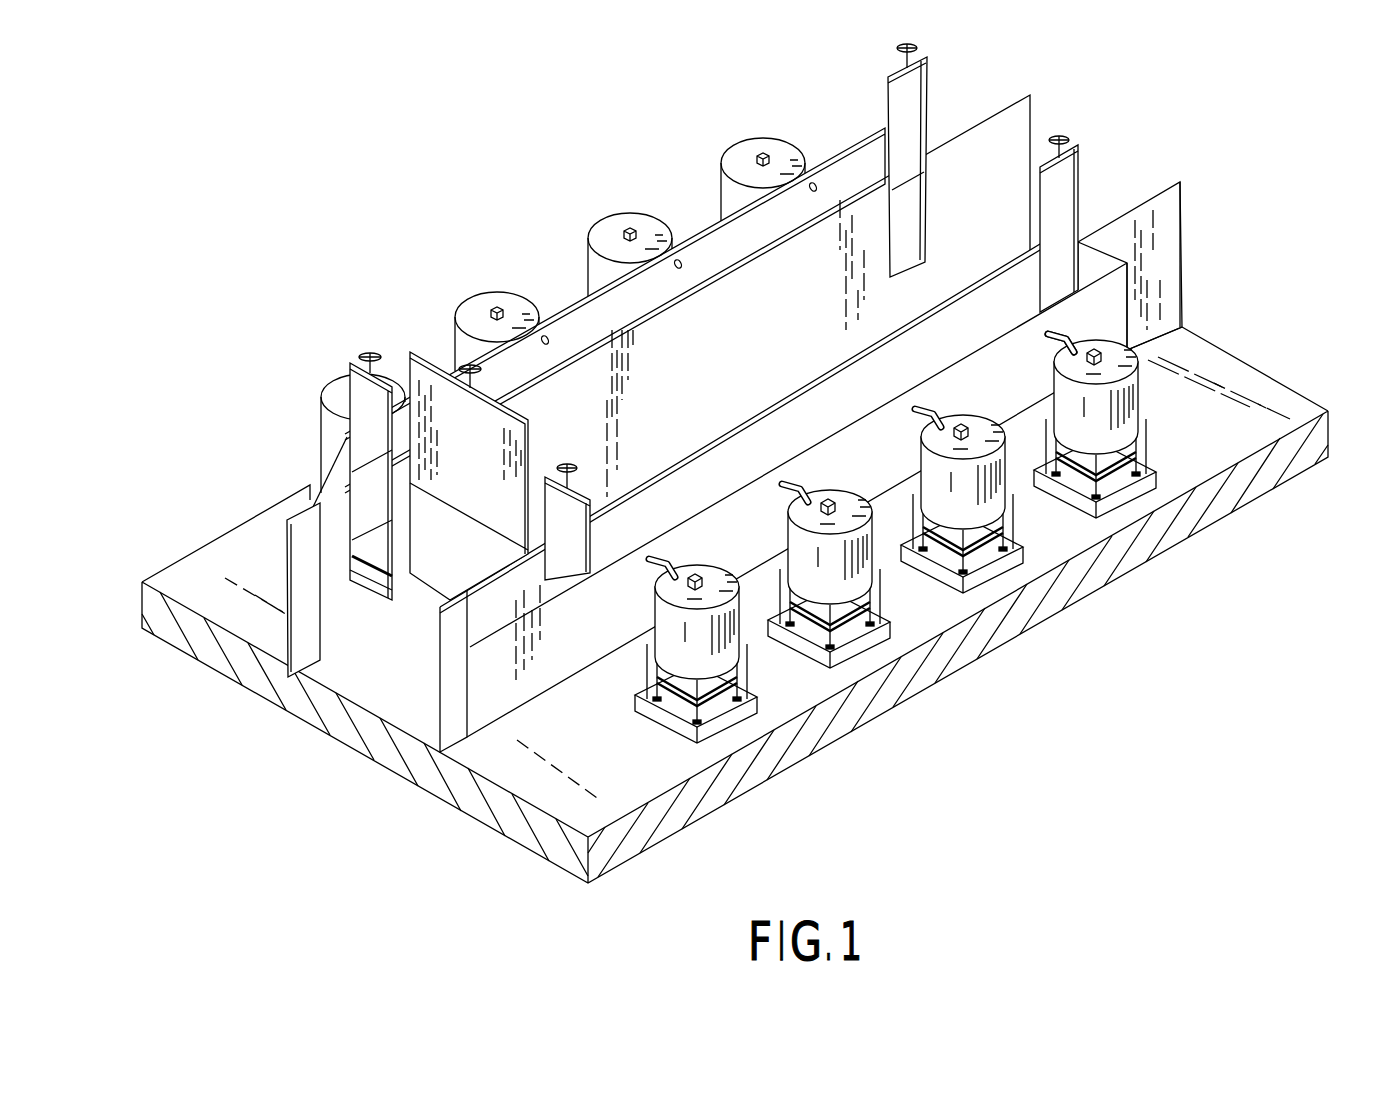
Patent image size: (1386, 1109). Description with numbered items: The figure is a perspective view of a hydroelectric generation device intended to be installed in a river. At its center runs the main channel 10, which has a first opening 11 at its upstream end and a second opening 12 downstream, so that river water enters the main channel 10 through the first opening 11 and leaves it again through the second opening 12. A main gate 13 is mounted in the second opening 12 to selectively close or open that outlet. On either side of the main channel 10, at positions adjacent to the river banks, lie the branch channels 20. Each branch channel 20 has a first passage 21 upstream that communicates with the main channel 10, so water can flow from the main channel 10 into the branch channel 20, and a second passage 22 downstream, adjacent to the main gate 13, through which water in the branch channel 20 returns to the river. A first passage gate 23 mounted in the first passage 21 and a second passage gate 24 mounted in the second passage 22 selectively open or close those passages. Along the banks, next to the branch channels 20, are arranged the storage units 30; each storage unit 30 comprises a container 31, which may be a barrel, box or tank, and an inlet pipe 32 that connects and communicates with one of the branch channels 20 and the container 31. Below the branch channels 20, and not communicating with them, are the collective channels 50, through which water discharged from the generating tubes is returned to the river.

The main channel 10 is at (1060, 98).
The first opening 11 is at (1110, 217).
The second opening 12 is at (436, 580).
The main gate 13 is at (430, 385).
The branch channel 20 is at (1140, 286).
The first passage 21 is at (918, 200).
The second passage 22 is at (356, 500).
The first passage gate 23 is at (900, 102).
The second passage gate 24 is at (360, 398).
The storage unit 30 is at (710, 146).
The container 31 is at (1120, 422).
The inlet pipe 32 is at (1058, 338).
The collective channel 50 is at (370, 575).